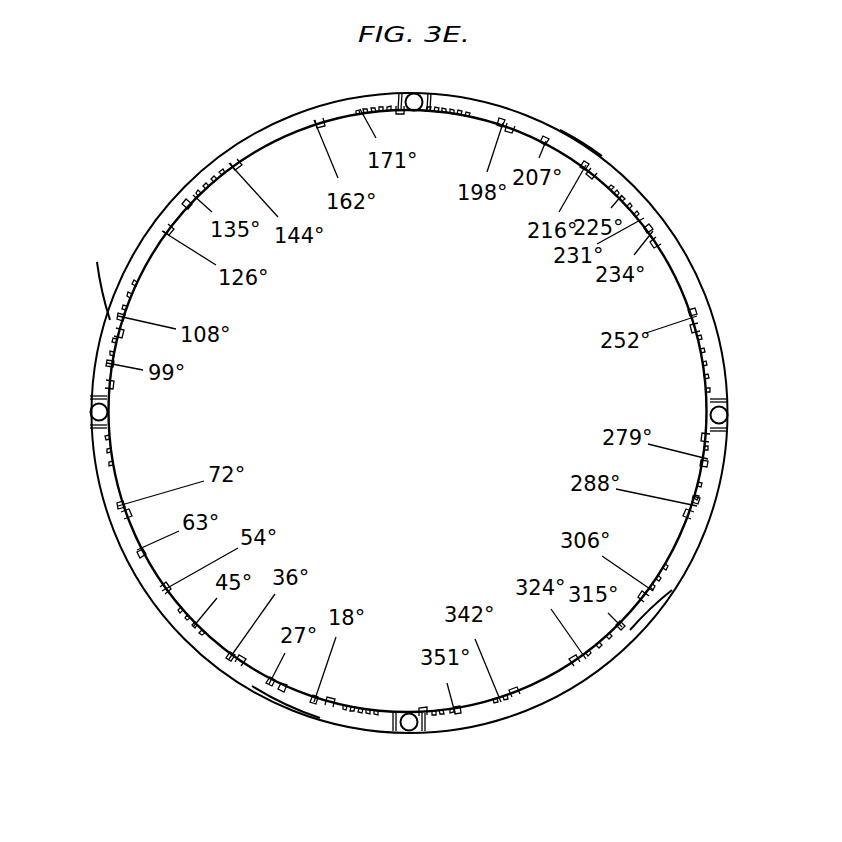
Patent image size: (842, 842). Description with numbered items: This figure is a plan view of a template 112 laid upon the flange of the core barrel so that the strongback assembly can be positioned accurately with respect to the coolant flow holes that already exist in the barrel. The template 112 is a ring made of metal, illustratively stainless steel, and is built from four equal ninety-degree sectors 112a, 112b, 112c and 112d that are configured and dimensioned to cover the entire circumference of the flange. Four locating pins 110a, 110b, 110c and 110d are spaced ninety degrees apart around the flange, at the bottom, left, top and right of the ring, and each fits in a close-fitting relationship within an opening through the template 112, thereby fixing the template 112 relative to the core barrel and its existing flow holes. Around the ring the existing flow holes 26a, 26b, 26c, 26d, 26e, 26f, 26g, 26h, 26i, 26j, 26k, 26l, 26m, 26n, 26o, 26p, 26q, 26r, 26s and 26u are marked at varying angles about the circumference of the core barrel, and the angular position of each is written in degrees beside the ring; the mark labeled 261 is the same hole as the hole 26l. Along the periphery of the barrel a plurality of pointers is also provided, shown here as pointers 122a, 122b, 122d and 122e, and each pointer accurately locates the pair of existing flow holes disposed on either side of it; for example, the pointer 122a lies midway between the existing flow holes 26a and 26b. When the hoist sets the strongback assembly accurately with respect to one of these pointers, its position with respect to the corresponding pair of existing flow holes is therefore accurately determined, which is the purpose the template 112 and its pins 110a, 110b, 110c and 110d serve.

The template 112 is at (214, 140).
The sector 112a is at (284, 709).
The sector 112b is at (114, 294).
The sector 112c is at (590, 144).
The sector 112d is at (653, 609).
The locating pin 110a is at (405, 731).
The locating pin 110b is at (107, 414).
The locating pin 110c is at (420, 98).
The locating pin 110d is at (727, 413).
The pointer 122a is at (279, 692).
The pointer 122b is at (127, 562).
The pointer 122d is at (175, 194).
The pointer 122e is at (93, 362).
The existing flow hole 26a is at (325, 721).
The existing flow hole 26b is at (230, 677).
The existing flow hole 26c is at (150, 600).
The existing flow hole 26d is at (109, 521).
The existing flow hole 26e is at (91, 384).
The existing flow hole 26f is at (100, 329).
The existing flow hole 26g is at (154, 219).
The existing flow hole 26h is at (225, 150).
The existing flow hole 26i is at (315, 106).
The existing flow hole 26j is at (400, 116).
The existing flow hole 26k is at (597, 168).
The existing flow hole 26l is at (510, 123).
The stop member 261 is at (537, 108).
The existing flow hole 26m is at (671, 233).
The existing flow hole 26n is at (713, 324).
The existing flow hole 26o is at (704, 440).
The existing flow hole 26p is at (706, 521).
The existing flow hole 26q is at (658, 609).
The existing flow hole 26r is at (521, 711).
The existing flow hole 26s is at (424, 718).
The stop member 26u is at (585, 677).